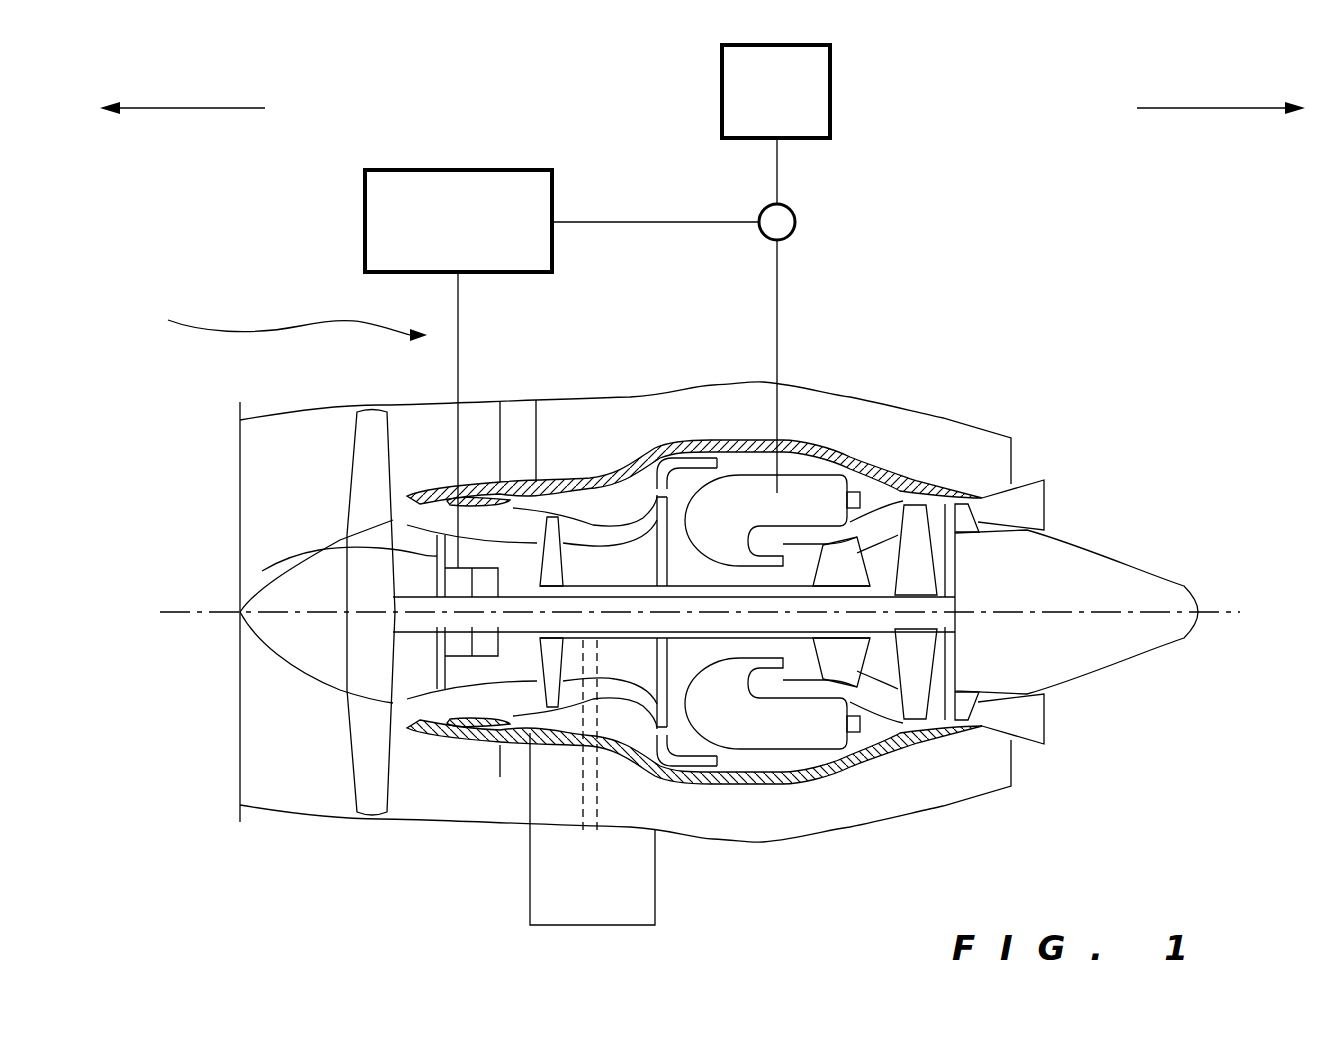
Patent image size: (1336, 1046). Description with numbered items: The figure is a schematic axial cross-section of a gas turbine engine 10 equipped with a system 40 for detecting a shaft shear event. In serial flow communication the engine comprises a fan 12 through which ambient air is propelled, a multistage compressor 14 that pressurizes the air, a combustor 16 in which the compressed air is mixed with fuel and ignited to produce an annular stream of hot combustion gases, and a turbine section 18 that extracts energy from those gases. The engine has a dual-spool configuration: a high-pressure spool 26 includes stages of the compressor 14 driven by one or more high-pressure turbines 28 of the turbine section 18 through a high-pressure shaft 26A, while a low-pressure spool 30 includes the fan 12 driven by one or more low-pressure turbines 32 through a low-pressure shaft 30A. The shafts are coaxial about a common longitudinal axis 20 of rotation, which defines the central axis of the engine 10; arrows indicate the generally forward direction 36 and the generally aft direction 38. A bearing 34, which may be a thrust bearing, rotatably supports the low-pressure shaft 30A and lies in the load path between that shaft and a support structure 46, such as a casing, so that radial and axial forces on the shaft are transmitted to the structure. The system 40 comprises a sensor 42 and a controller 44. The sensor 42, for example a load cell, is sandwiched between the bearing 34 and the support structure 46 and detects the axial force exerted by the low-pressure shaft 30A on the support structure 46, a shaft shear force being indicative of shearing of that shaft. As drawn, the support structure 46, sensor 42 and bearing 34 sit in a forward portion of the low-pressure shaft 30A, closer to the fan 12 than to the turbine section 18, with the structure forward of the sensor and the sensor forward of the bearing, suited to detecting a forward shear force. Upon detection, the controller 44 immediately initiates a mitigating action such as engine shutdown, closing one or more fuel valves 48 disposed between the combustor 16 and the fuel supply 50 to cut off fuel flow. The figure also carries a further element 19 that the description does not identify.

The gas turbine engine 10 is at (1075, 312).
The fan 12 is at (365, 742).
The multistage compressor 14 is at (603, 533).
The combustor 16 is at (758, 502).
The turbine section 18 is at (880, 670).
The fuel injector 19 is at (793, 553).
The longitudinal axis of rotation 20 is at (1230, 612).
The high-pressure spool 26 is at (647, 586).
The high-pressure shaft 26A is at (588, 560).
The high-pressure turbine 28 is at (842, 553).
The low-pressure spool 30 is at (880, 597).
The low-pressure shaft 30A is at (523, 650).
The low-pressure turbine 32 is at (917, 517).
The bearing 34 is at (495, 730).
The forward direction arrow 36 is at (185, 105).
The aft direction arrow 38 is at (1228, 105).
The system for detecting a shaft shear event 40 is at (282, 324).
The sensor 42 is at (456, 727).
The controller 44 is at (462, 170).
The support structure 46 is at (262, 571).
The fuel valve 48 is at (797, 222).
The fuel supply 50 is at (832, 92).